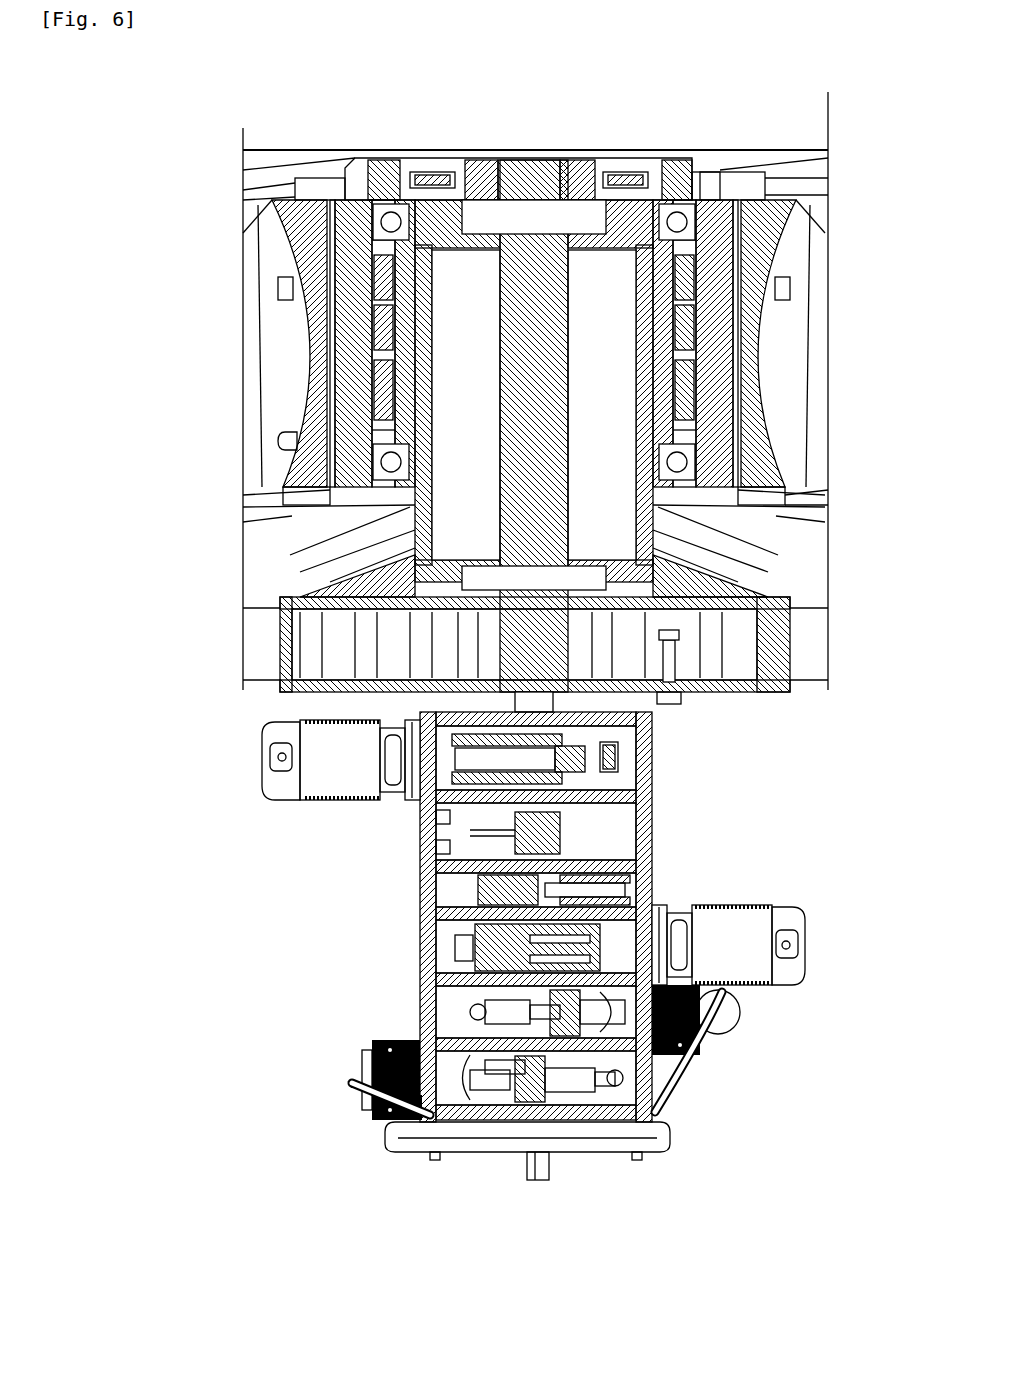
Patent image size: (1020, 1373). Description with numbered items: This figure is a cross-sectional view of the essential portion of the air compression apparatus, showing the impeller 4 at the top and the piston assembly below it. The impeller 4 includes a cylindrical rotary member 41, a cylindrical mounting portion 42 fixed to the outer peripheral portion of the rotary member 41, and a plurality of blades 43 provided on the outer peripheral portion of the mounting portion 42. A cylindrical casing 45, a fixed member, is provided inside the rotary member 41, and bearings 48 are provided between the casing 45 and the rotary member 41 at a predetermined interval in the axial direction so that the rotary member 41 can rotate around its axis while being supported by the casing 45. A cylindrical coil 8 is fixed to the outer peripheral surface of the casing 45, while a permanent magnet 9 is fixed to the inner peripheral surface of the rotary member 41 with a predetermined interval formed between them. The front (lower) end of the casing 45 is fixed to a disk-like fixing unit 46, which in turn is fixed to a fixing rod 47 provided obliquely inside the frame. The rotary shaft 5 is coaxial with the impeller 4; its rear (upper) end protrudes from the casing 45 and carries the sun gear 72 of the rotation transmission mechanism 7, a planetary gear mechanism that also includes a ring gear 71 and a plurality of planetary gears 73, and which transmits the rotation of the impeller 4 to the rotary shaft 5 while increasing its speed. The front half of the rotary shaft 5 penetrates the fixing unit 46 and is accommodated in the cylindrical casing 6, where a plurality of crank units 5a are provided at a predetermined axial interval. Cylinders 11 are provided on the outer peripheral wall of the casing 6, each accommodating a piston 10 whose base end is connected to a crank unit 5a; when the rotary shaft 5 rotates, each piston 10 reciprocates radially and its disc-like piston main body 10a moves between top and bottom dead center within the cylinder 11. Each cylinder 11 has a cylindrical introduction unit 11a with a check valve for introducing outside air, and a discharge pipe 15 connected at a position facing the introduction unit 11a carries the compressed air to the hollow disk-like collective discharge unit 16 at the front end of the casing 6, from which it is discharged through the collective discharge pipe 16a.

The impeller 4 is at (243, 311).
The rotary shaft 5 is at (565, 342).
The crank unit 5a is at (640, 768).
The cylindrical casing 6 is at (420, 937).
The rotation transmission mechanism 7 is at (620, 155).
The coil 8 is at (430, 342).
The permanent magnet 9 is at (418, 408).
The piston 10 is at (420, 803).
The piston main body 10a is at (377, 765).
The cylinder 11 is at (292, 803).
The introduction unit 11a is at (262, 755).
The discharge pipe 15 is at (372, 1086).
The collective discharge unit 16 is at (605, 1152).
The collective discharge pipe 16a is at (527, 1168).
The rotary member 41 is at (320, 447).
The mounting portion 42 is at (262, 222).
The blade 43 is at (268, 380).
The casing 45 is at (755, 342).
The fixing unit 46 is at (735, 690).
The fixing rod 47 is at (262, 650).
The bearing 48 is at (815, 195).
The ring gear 71 is at (383, 162).
The sun gear 72 is at (497, 162).
The planetary gear 73 is at (478, 162).